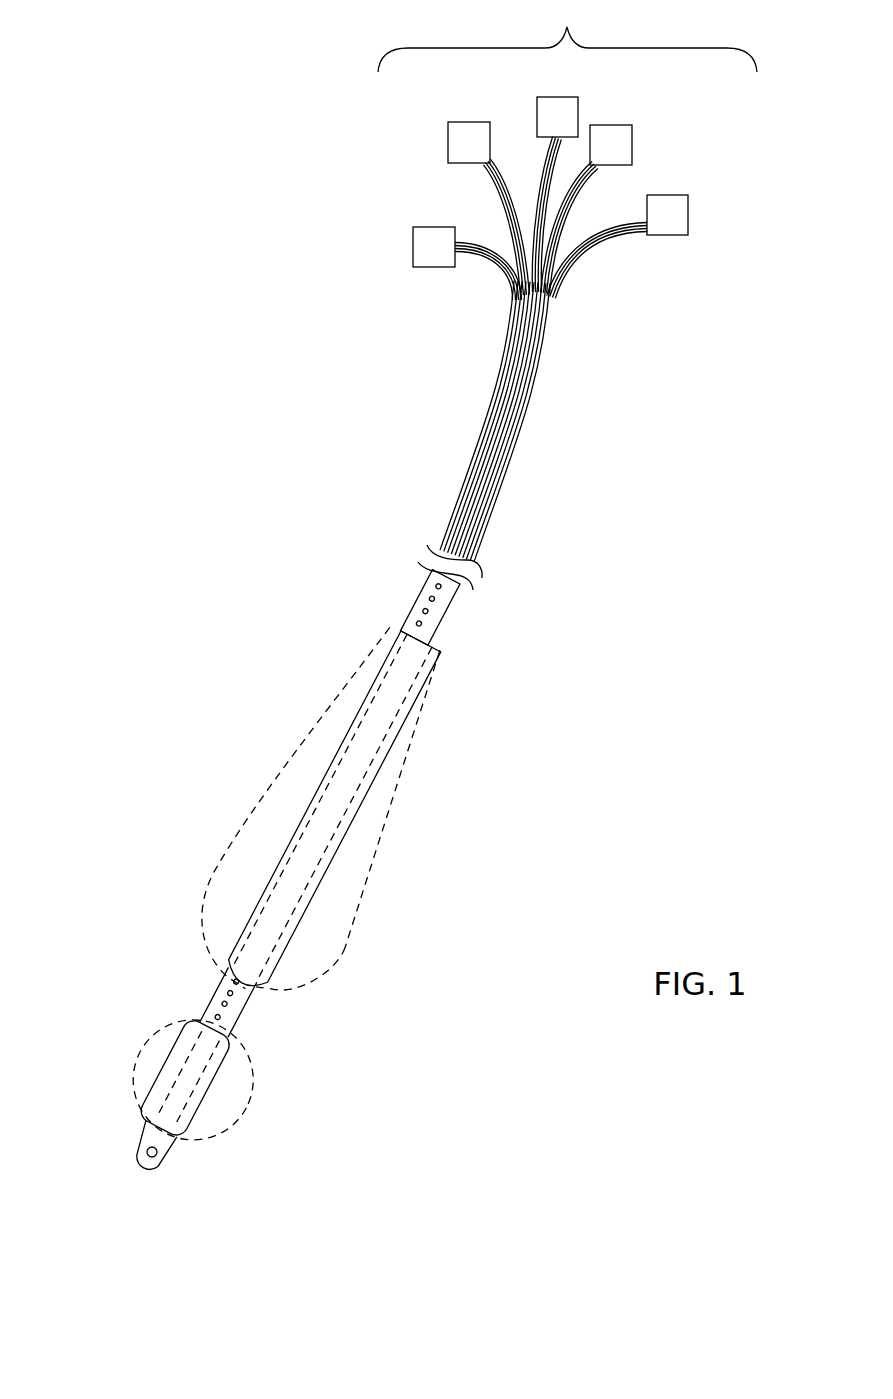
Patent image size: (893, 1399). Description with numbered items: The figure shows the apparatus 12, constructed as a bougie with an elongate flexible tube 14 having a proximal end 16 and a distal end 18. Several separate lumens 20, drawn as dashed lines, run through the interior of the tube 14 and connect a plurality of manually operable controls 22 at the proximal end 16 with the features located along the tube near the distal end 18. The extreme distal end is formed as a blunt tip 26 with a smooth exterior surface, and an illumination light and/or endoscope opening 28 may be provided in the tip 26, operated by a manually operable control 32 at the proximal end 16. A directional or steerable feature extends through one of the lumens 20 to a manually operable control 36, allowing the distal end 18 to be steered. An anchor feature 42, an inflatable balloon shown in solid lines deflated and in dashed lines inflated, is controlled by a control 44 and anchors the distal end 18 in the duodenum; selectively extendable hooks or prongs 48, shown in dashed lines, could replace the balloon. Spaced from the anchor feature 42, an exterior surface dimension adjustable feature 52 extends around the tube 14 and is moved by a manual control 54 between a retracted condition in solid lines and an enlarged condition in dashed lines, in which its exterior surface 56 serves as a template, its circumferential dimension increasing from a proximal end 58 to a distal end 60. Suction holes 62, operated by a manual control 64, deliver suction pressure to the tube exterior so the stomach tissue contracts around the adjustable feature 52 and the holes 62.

The apparatus 12 is at (548, 633).
The elongate flexible tube 14 is at (513, 453).
The proximal end 16 is at (612, 278).
The distal end 18 is at (237, 1147).
The lumens 20 is at (478, 443).
The manually operable controls 22 is at (567, 36).
The blunt tip 26 is at (153, 1162).
The illumination light and/or endoscope opening 28 is at (160, 1162).
The manually operable control 32 is at (413, 252).
The manually operable control 36 is at (448, 139).
The anchor feature 42 is at (173, 1050).
The control 44 is at (538, 98).
The selectively extendable hooks or prongs 48 is at (130, 1143).
The exterior surface dimension adjustable feature 52 is at (277, 787).
The manual control 54 is at (632, 132).
The exterior surface 56 is at (387, 840).
The proximal end 58 is at (440, 652).
The distal end 60 is at (348, 948).
The suction holes 62 is at (430, 597).
The manual control 64 is at (688, 211).